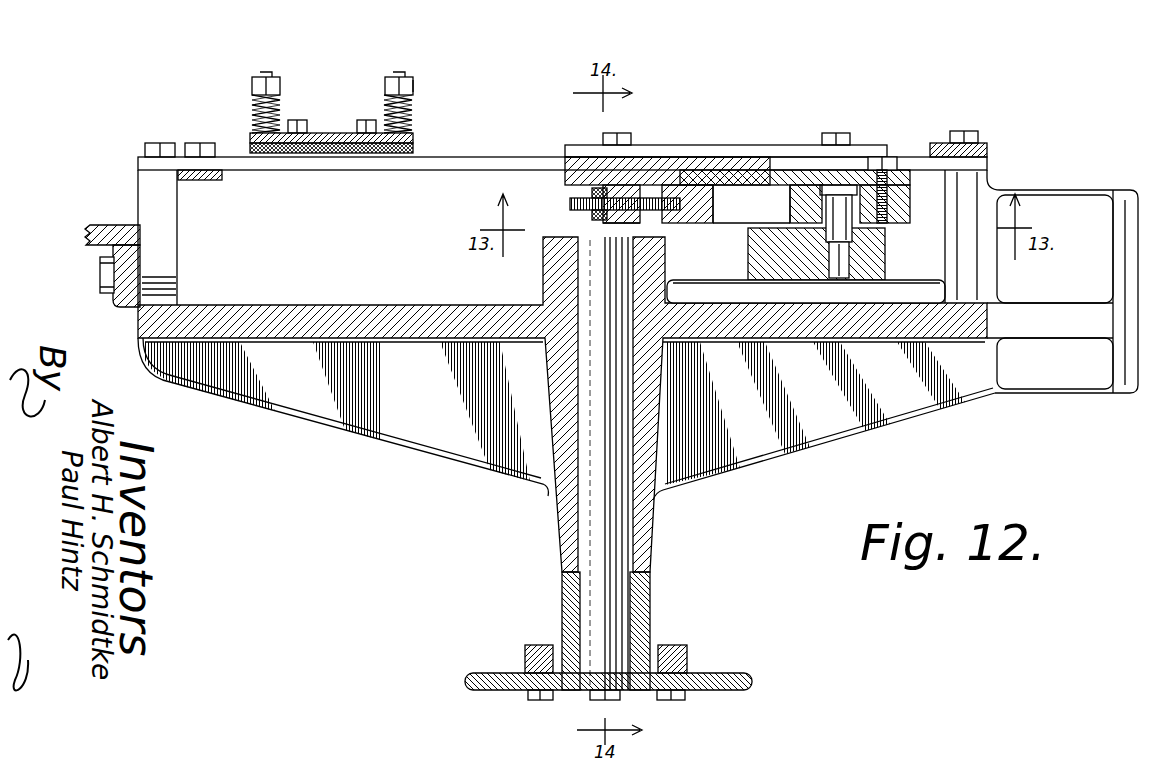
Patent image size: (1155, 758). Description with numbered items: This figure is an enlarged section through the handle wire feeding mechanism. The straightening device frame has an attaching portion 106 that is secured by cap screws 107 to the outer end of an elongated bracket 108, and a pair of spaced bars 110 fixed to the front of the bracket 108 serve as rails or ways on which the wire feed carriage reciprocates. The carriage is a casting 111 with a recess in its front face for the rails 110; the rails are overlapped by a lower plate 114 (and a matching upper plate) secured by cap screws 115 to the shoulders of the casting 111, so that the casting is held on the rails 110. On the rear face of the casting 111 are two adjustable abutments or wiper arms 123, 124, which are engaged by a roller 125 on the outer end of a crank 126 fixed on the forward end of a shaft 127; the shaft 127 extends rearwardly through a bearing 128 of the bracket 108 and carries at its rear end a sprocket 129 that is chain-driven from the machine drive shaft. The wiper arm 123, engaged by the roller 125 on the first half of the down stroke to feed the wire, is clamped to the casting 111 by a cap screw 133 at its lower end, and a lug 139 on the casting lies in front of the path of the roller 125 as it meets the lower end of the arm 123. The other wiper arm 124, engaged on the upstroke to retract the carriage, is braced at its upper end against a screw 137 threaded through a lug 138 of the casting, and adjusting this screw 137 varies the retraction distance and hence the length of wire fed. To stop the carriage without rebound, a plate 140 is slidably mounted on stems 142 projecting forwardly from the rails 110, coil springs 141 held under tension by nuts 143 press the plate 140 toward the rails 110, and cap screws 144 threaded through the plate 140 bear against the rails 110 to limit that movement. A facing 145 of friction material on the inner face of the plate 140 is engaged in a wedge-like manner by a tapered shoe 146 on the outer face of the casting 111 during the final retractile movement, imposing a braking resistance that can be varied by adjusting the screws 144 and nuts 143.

The attaching portion 106 is at (86, 234).
The cap screws 107 is at (100, 272).
The elongated bracket 108 is at (342, 432).
The spaced bars 110 is at (490, 157).
The casting 111 is at (786, 170).
The lower plate 114 is at (866, 148).
The cap screws 115 is at (722, 133).
The wiper arm 123 is at (905, 226).
The wiper arm 124 is at (712, 215).
The roller 125 is at (785, 230).
The crank 126 is at (760, 275).
The shaft 127 is at (592, 515).
The bearing 128 is at (645, 542).
The sprocket 129 is at (480, 673).
The cap screw 133 is at (895, 158).
The screw 137 is at (572, 203).
The lug 138 is at (605, 223).
The lug 139 is at (790, 200).
The plate 140 is at (320, 132).
The coil springs 141 is at (253, 116).
The stems 142 is at (270, 74).
The nuts 143 is at (414, 85).
The cap screws 144 is at (299, 118).
The facing 145 is at (345, 153).
The tapered shoe 146 is at (660, 155).